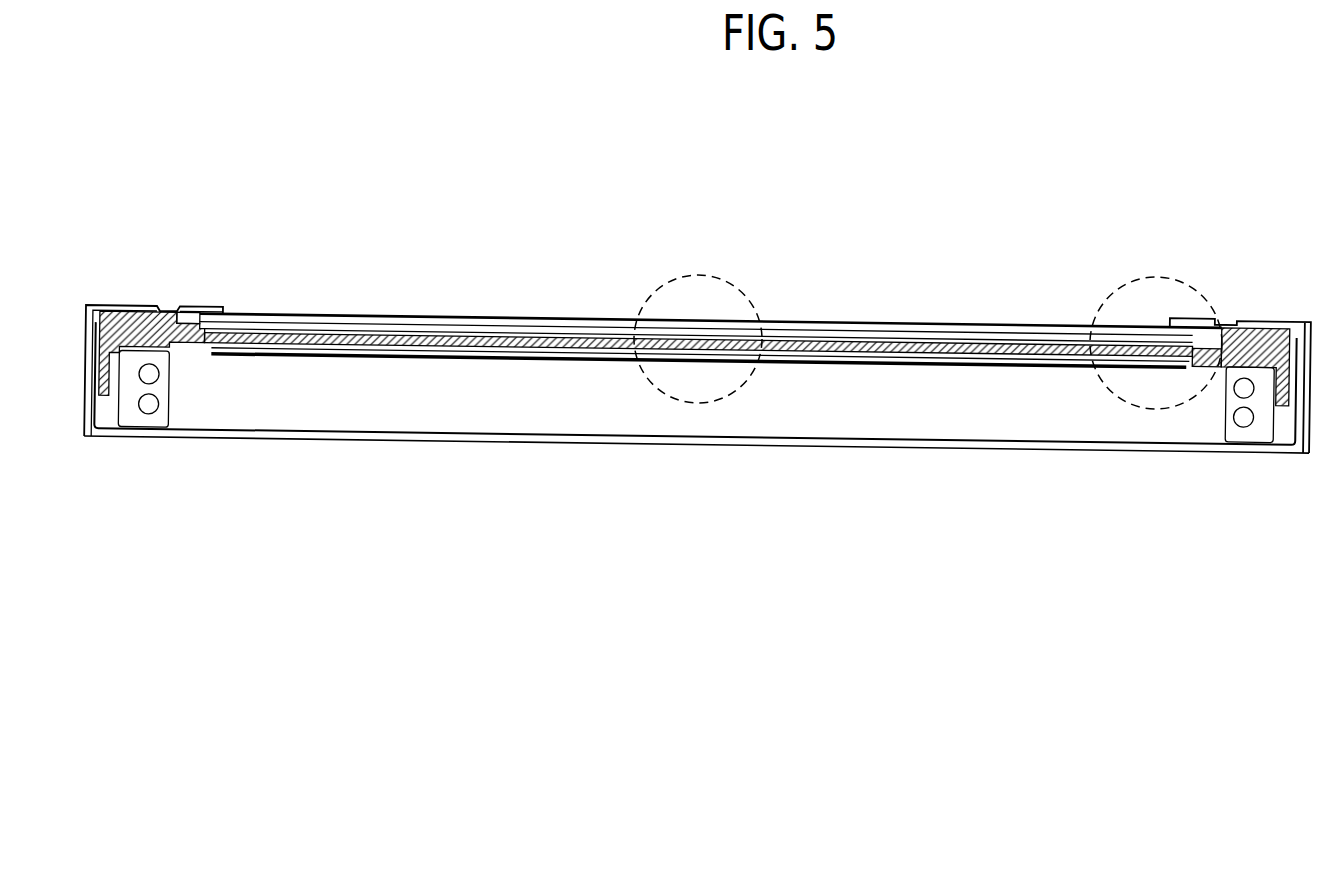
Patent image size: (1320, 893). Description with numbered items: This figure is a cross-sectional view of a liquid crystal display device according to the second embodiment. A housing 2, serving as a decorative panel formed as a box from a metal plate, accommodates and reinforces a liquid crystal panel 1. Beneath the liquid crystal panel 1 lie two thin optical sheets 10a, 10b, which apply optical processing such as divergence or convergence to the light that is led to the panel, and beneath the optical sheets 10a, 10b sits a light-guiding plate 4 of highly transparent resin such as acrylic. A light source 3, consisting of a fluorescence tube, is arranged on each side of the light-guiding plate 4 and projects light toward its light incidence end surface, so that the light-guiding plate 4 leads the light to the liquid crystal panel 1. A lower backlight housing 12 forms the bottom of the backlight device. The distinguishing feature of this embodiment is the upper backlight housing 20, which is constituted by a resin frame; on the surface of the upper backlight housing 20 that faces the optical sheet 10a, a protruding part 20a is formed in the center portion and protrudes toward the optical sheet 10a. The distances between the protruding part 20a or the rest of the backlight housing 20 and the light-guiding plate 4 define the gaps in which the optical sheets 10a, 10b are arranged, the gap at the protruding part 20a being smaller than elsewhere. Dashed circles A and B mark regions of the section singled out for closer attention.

The liquid crystal panel 1 is at (895, 313).
The housing 2 is at (1250, 325).
The light source 3 is at (1237, 443).
The light-guiding plate 4 is at (563, 418).
The optical sheet 10a is at (295, 348).
The optical sheet 10b is at (340, 360).
The lower backlight housing 12 is at (863, 448).
The upper backlight housing 20 is at (1278, 333).
The protruding part 20a is at (720, 338).
The detail region A is at (698, 272).
The detail region B is at (1157, 276).